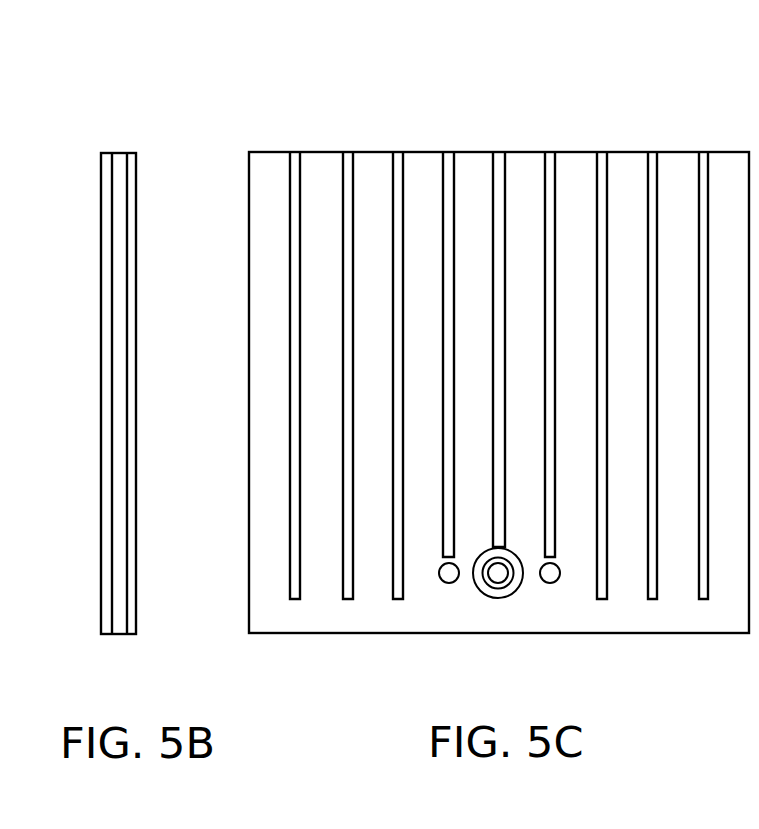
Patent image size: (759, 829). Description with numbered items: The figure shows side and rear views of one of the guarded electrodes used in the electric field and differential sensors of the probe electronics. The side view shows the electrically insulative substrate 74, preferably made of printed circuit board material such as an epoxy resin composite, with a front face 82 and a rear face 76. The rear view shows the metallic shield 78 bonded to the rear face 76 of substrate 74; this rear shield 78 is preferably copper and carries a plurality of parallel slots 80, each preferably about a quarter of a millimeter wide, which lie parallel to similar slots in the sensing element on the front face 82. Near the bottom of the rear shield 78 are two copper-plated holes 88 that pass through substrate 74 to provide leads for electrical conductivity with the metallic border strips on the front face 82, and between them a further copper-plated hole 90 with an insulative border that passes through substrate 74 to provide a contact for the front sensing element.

In FIG. 5B, the electrically insulative substrate 74 is at (119, 158).
In FIG. 5B, the front face 82 is at (96, 243).
In FIG. 5B, the rear face 76 is at (143, 311).
In FIG. 5C, the metallic shield 78 is at (363, 620).
In FIG. 5C, the slots 80 is at (497, 152).
In FIG. 5C, the copper-plated holes 88 is at (452, 578).
In FIG. 5C, the copper-plated hole with insulative border 90 is at (502, 580).